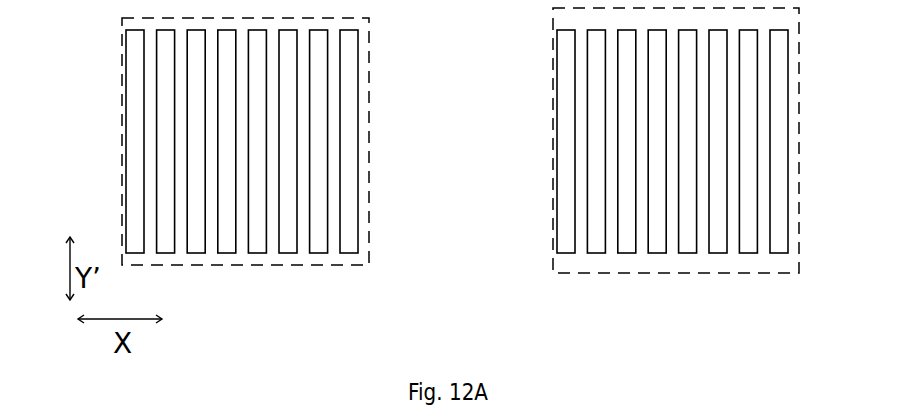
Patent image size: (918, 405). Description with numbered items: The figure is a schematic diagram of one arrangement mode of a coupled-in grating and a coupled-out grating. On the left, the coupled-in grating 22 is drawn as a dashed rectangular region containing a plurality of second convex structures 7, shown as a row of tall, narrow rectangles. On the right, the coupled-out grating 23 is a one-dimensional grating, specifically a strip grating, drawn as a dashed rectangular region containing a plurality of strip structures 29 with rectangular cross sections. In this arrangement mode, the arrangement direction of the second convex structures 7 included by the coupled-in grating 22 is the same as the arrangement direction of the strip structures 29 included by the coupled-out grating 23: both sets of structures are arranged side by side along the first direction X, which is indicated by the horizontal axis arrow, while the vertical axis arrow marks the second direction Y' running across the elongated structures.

The second convex structures 7 is at (122, 131).
The coupled-in grating 22 is at (126, 76).
The coupled-out grating 23 is at (799, 133).
The strip structures 29 is at (788, 93).